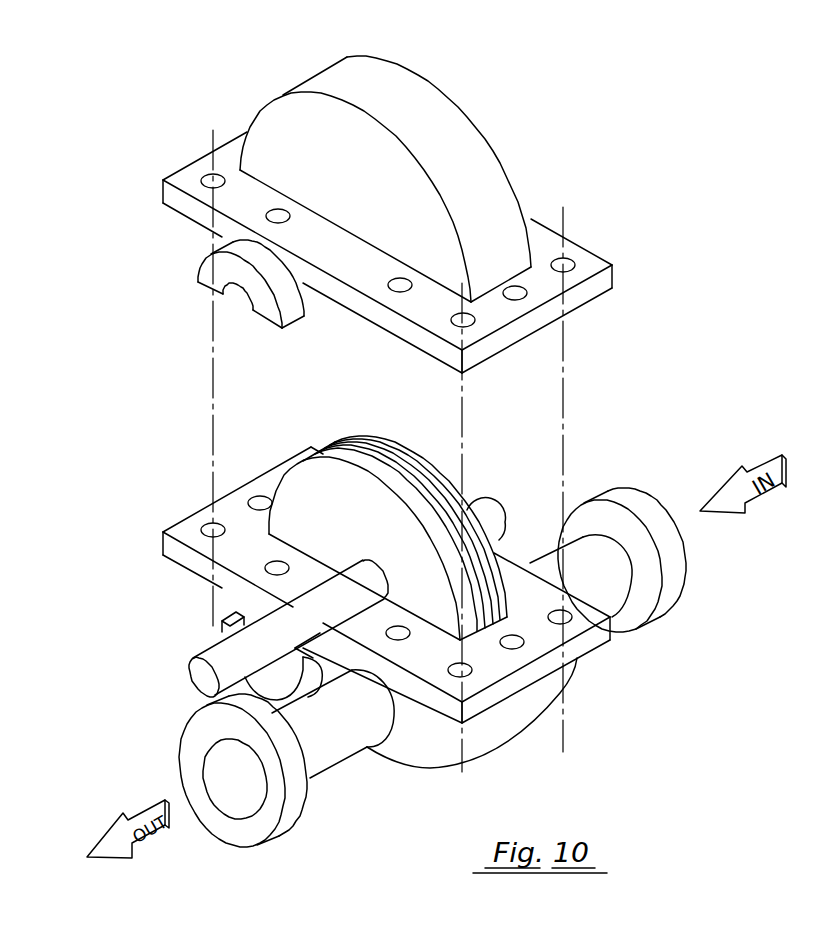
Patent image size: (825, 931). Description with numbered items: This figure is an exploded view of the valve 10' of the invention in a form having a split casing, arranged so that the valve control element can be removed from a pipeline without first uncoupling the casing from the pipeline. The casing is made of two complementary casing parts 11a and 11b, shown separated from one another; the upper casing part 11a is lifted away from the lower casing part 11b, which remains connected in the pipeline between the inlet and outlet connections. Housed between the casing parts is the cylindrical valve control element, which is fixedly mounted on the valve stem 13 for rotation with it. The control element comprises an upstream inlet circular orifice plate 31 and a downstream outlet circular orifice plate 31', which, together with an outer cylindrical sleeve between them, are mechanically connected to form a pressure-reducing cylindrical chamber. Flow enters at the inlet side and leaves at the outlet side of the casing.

The valve 10' is at (455, 451).
The casing part 11a is at (490, 108).
The casing part 11b is at (525, 740).
The valve stem 13 is at (203, 652).
The upstream inlet circular orifice plate 31 is at (411, 519).
The downstream outlet circular orifice plate 31' is at (326, 531).